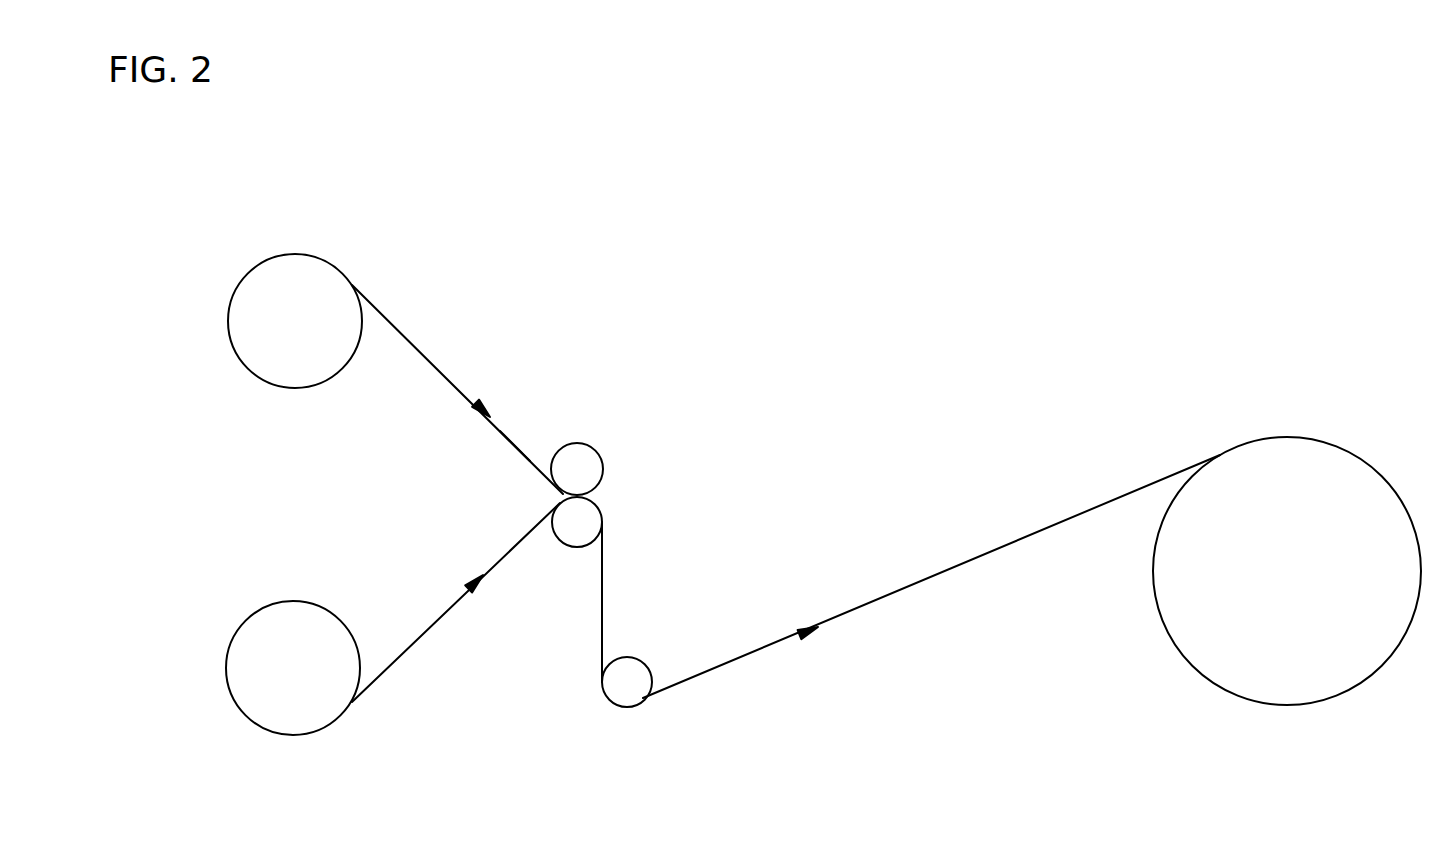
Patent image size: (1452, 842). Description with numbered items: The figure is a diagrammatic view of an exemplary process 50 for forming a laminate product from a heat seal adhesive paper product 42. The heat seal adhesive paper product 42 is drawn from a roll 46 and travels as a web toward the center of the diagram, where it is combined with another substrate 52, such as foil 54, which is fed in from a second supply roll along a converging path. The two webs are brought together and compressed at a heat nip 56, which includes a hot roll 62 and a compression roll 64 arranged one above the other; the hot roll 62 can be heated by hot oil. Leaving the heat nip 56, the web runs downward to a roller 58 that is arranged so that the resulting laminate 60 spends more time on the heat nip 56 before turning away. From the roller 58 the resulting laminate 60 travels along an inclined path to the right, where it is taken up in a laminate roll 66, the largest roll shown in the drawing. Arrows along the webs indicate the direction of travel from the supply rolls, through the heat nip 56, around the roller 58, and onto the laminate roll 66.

The heat seal adhesive paper product 42 is at (453, 605).
The roll 46 is at (302, 713).
The process for forming a laminate product 50 is at (827, 250).
The substrate 52 is at (436, 368).
The foil 54 is at (514, 444).
The heat nip 56 is at (613, 397).
The roller 58 is at (630, 657).
The resulting laminate 60 is at (893, 593).
The hot roll 62 is at (575, 525).
The compression roll 64 is at (587, 467).
The laminate roll 66 is at (1287, 436).